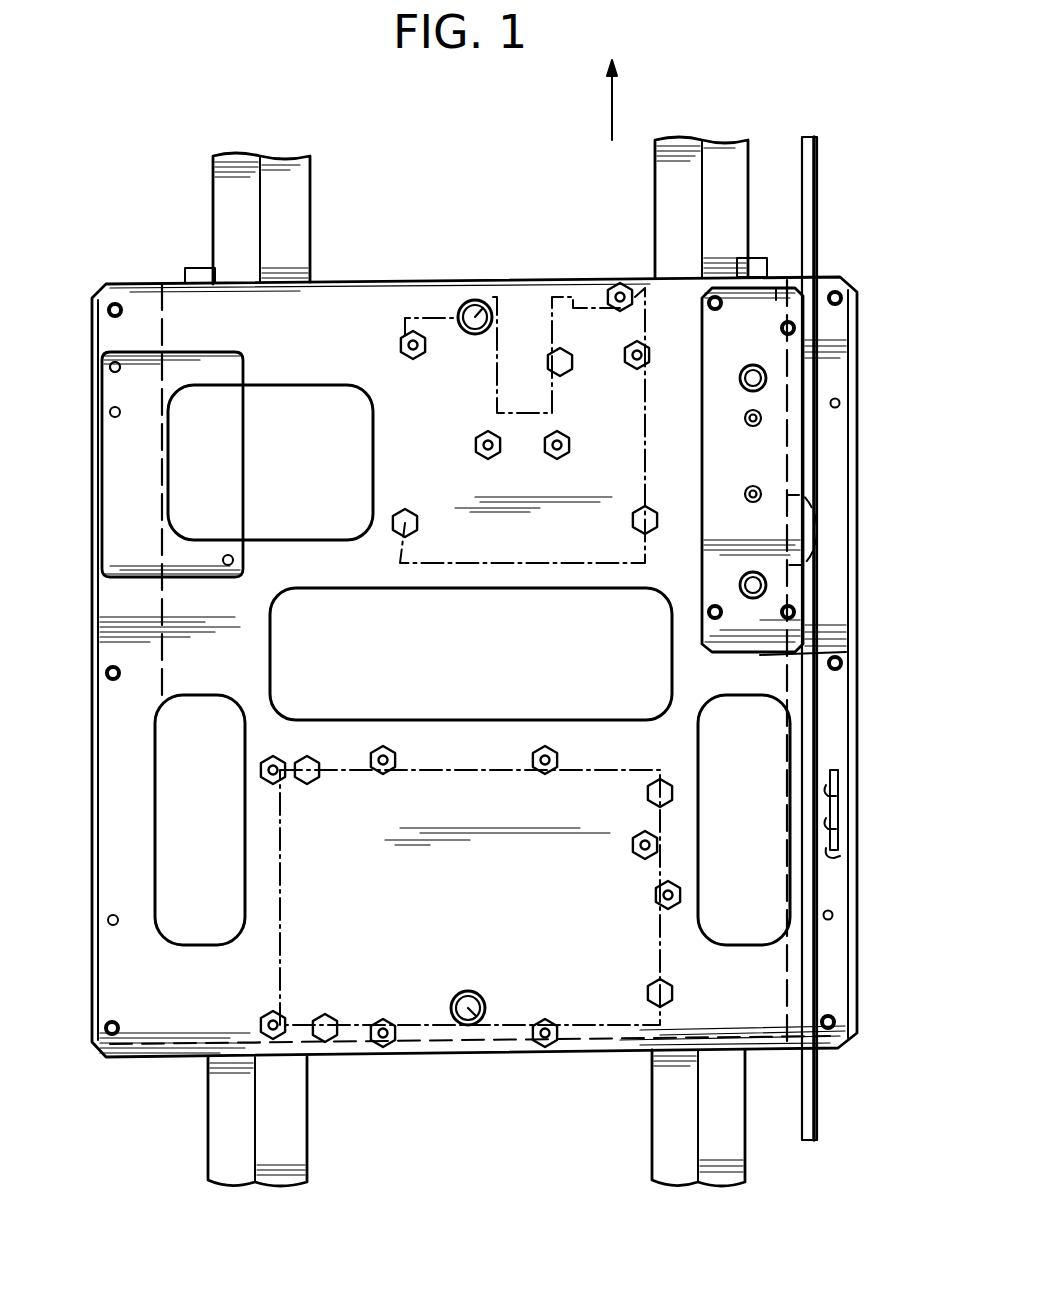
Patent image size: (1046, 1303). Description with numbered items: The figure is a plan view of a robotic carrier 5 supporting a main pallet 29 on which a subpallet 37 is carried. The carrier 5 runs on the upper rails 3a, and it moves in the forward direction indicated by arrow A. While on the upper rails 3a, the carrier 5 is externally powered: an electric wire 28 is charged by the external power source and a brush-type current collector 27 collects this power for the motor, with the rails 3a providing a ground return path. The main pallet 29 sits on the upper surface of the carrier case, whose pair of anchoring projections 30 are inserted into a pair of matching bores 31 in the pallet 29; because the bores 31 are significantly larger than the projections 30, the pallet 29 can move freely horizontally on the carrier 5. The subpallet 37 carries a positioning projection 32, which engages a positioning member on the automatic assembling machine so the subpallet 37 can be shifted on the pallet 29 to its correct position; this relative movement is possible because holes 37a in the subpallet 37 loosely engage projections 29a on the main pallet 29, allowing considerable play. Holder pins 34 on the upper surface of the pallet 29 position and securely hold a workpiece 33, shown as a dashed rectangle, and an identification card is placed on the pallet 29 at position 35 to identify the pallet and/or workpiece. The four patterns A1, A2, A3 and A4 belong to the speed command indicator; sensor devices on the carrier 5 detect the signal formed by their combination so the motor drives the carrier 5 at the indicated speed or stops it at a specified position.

The upper rails 3a is at (312, 168).
The robotic carrier 5 is at (776, 300).
The brush-type current collector 27 is at (817, 533).
The electric wire 28 is at (815, 1092).
The main pallet 29 is at (855, 320).
The projections 29a is at (765, 371).
The anchoring projections 30 is at (482, 310).
The bores 31 is at (471, 306).
The positioning projection 32 is at (762, 418).
The workpiece 33 is at (582, 320).
The holder pins 34 is at (413, 330).
The ID card position 35 is at (120, 472).
The subpallet 37 is at (800, 636).
The holes 37a is at (762, 378).
The arrow A is at (624, 96).
The pattern A1 is at (826, 770).
The pattern A2 is at (842, 858).
The pattern A3 is at (836, 792).
The pattern A4 is at (836, 822).